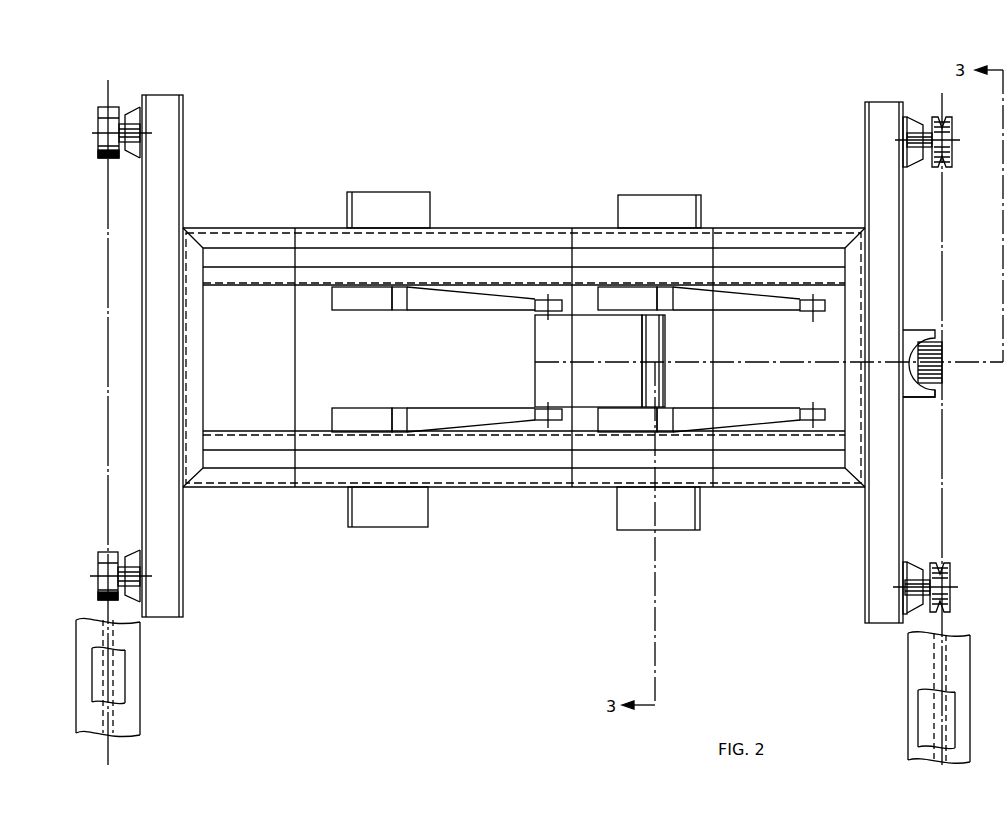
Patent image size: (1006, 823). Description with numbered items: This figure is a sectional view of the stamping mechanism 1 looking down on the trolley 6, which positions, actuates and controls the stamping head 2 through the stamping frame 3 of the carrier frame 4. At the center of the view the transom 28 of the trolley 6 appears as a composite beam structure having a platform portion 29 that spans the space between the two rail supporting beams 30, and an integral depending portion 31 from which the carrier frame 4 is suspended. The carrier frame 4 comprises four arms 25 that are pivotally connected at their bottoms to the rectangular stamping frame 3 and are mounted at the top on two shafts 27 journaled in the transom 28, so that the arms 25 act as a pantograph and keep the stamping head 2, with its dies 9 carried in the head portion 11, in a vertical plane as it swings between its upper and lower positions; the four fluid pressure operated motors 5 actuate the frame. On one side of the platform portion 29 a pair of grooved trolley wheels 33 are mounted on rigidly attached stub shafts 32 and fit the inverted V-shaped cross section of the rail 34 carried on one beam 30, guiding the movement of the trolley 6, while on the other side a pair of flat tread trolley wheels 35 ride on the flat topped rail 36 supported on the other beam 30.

The stamping mechanism 1 is at (858, 559).
The stamping head 2 is at (935, 358).
The stamping frame 3 is at (543, 388).
The carrier frame 4 is at (500, 316).
The frame actuating fluid pressure operated motor 5 is at (688, 523).
The trolley 6 is at (150, 356).
The die 9 is at (942, 351).
The head portion 11 is at (912, 383).
The arm 25 is at (355, 302).
The shaft 27 is at (647, 339).
The transom 28 is at (247, 482).
The platform portion 29 is at (176, 147).
The rail supporting beam 30 is at (523, 690).
The depending portion 31 is at (240, 276).
The stub shaft 32 is at (915, 580).
The grooved trolley wheel 33 is at (950, 167).
The rail 34 is at (928, 724).
The flat tread trolley wheel 35 is at (102, 112).
The flat topped rail 36 is at (118, 683).